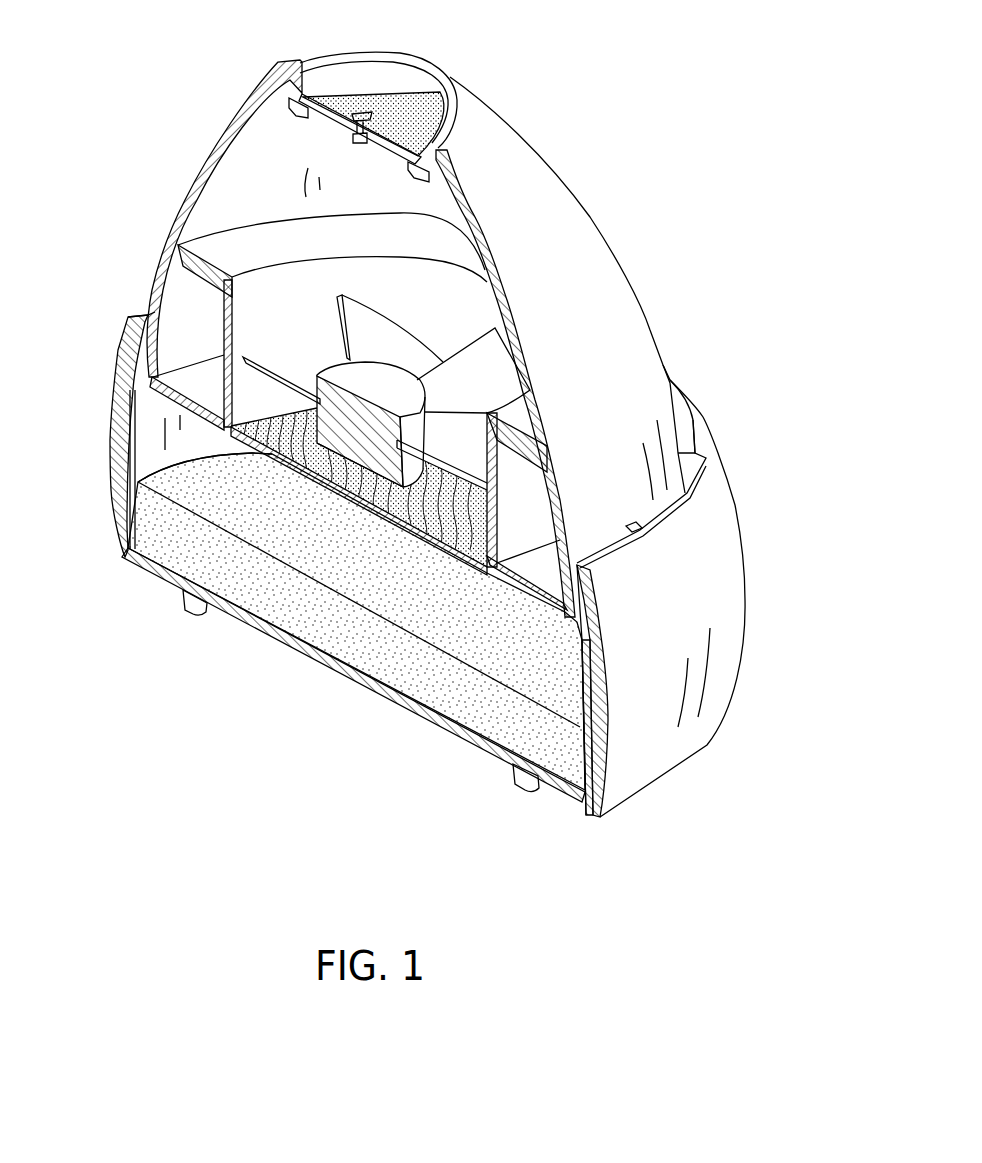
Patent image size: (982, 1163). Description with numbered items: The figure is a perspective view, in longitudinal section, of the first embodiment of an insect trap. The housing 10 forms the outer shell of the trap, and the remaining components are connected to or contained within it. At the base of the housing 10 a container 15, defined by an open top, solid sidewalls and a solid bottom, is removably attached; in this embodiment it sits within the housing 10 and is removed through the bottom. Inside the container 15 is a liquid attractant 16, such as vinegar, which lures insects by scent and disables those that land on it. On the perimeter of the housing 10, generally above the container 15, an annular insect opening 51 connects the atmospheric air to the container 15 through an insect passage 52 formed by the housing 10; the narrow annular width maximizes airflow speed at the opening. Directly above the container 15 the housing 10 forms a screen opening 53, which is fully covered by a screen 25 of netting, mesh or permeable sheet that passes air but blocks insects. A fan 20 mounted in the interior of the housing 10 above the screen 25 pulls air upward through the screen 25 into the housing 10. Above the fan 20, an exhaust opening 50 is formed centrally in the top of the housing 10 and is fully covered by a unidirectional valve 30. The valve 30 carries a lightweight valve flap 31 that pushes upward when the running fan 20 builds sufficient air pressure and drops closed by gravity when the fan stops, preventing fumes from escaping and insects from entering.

The housing 10 is at (550, 160).
The container 15 is at (161, 570).
The attractant 16 is at (237, 612).
The fan 20 is at (313, 367).
The screen 25 is at (437, 533).
The valve 30 is at (357, 145).
The valve flap 31 is at (410, 100).
The exhaust opening 50 is at (353, 70).
The insect opening 51 is at (137, 301).
The insect passage 52 is at (138, 355).
The screen opening 53 is at (461, 568).